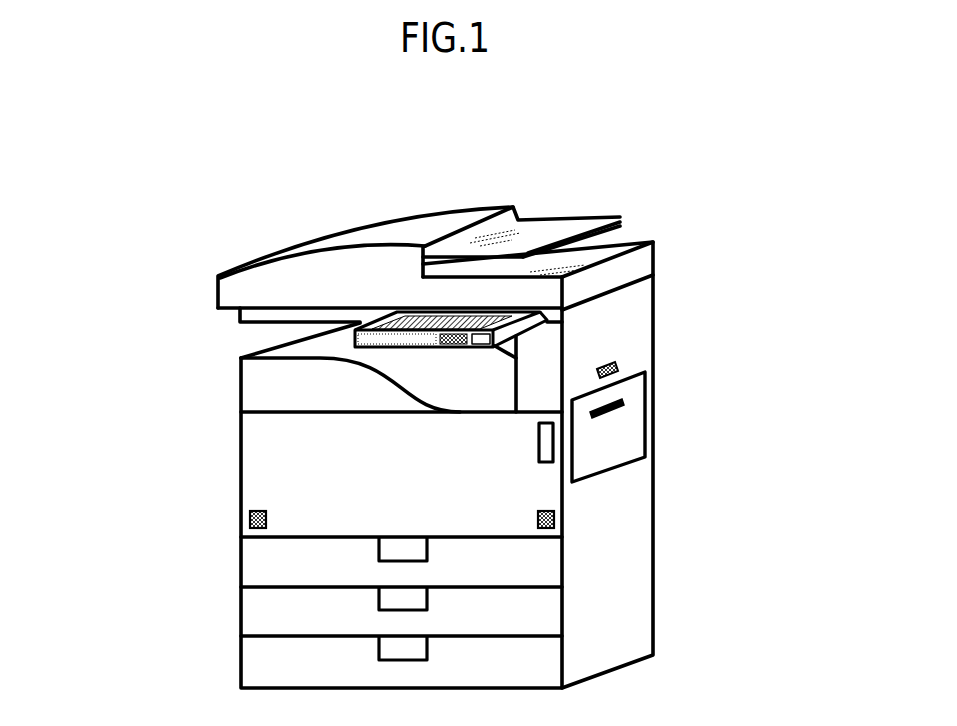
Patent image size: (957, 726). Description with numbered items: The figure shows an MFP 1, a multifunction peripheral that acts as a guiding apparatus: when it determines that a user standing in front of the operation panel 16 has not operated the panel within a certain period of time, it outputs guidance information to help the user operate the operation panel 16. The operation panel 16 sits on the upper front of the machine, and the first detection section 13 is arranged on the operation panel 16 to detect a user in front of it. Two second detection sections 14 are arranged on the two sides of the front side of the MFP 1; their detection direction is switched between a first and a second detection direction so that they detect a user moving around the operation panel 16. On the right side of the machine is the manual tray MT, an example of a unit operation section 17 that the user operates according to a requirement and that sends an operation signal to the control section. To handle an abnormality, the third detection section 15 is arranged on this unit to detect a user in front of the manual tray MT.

The MFP 1 is at (787, 133).
The operation panel 16 is at (440, 310).
The first detection section 13 is at (357, 334).
The second detection section 14 is at (250, 515).
The third detection section 15 is at (618, 364).
The manual tray MT is at (719, 427).
The unit operation section 17 is at (607, 427).